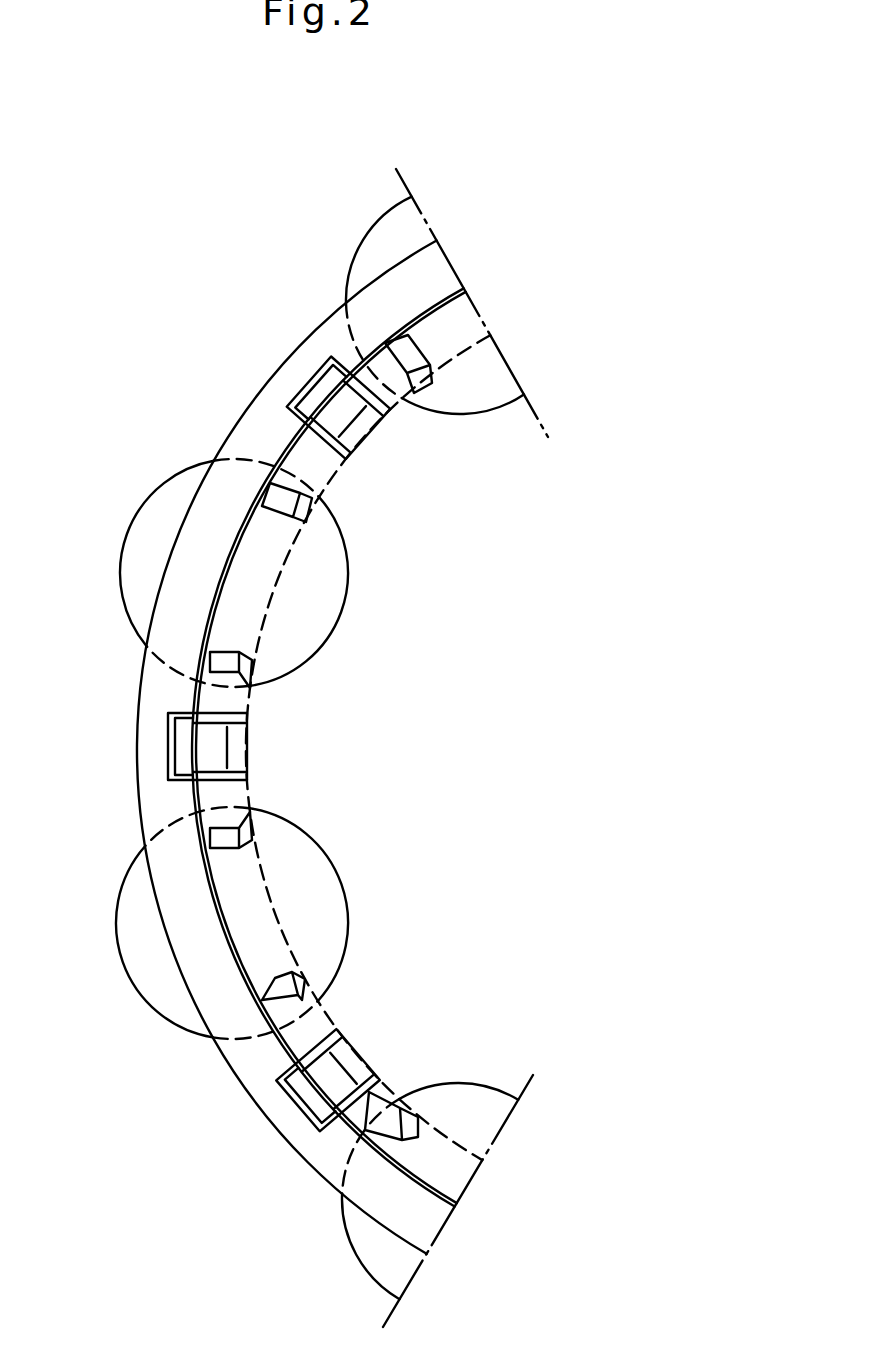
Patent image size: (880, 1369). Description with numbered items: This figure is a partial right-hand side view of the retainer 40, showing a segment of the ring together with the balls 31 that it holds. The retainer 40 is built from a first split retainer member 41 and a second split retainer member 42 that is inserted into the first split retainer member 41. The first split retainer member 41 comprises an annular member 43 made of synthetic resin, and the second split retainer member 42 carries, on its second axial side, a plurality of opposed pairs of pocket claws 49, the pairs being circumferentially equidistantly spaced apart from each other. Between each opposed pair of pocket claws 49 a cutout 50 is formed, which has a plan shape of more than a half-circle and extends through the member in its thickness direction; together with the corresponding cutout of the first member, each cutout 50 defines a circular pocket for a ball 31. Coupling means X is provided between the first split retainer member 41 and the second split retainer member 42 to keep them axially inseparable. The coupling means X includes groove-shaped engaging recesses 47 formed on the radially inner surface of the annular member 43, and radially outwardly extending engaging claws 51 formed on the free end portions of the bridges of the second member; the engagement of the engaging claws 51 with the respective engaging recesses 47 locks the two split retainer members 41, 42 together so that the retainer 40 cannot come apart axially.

The ball (rolling element) 31 is at (163, 498).
The retainer 40 is at (256, 398).
The first split retainer member 41 is at (315, 338).
The second split retainer member 42 is at (369, 438).
The annular member 43 is at (153, 817).
The engaging recesses 47 is at (174, 738).
The pocket claws 49 is at (303, 487).
The cutout 50 is at (224, 652).
The engaging claws 51 is at (184, 755).
The coupling means X is at (147, 704).